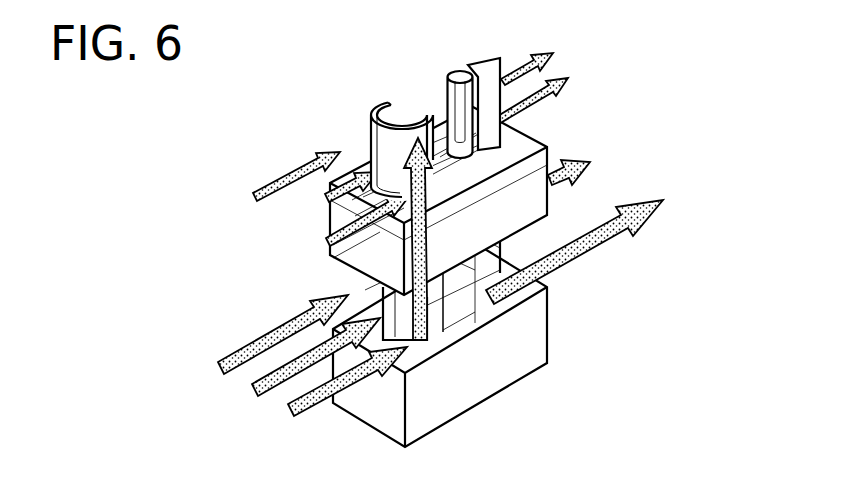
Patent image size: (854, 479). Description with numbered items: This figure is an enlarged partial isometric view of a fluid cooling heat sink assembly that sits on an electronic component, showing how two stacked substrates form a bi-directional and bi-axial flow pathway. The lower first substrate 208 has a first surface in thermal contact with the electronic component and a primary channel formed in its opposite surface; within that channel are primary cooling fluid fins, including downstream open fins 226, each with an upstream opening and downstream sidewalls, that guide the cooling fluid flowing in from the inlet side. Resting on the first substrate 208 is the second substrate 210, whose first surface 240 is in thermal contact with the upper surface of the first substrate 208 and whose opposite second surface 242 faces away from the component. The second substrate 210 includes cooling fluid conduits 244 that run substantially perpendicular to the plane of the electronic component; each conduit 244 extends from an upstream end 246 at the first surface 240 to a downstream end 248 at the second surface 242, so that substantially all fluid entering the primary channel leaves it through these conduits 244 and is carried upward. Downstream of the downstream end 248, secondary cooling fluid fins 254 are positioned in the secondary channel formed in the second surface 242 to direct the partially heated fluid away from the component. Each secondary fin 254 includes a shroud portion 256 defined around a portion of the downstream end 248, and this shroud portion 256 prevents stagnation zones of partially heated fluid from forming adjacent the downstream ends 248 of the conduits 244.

The first substrate 208 is at (467, 388).
The second substrate 210 is at (497, 193).
The second surface 242 is at (530, 140).
The downstream open fins 226 is at (467, 293).
The first surface 240 is at (343, 280).
The cooling fluid conduits 244 is at (333, 258).
The upstream end 246 is at (428, 300).
The downstream end 248 is at (540, 225).
The secondary cooling fluid fins 254 is at (452, 80).
The shroud portion 256 is at (372, 112).